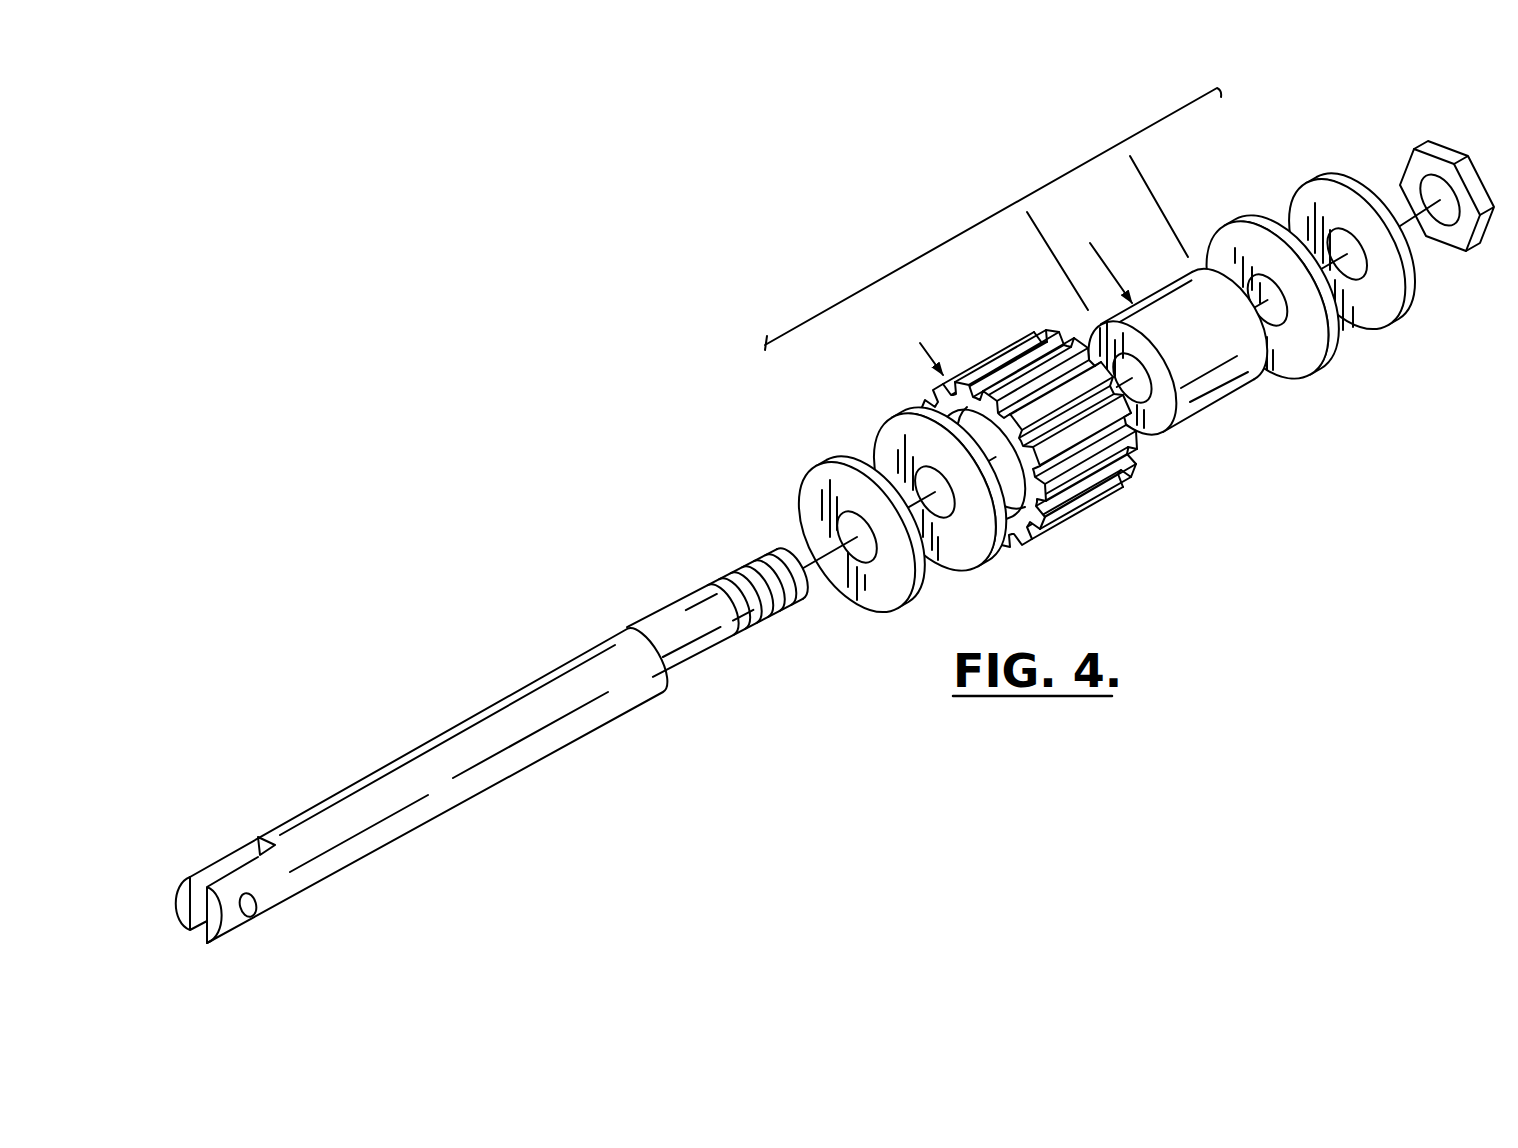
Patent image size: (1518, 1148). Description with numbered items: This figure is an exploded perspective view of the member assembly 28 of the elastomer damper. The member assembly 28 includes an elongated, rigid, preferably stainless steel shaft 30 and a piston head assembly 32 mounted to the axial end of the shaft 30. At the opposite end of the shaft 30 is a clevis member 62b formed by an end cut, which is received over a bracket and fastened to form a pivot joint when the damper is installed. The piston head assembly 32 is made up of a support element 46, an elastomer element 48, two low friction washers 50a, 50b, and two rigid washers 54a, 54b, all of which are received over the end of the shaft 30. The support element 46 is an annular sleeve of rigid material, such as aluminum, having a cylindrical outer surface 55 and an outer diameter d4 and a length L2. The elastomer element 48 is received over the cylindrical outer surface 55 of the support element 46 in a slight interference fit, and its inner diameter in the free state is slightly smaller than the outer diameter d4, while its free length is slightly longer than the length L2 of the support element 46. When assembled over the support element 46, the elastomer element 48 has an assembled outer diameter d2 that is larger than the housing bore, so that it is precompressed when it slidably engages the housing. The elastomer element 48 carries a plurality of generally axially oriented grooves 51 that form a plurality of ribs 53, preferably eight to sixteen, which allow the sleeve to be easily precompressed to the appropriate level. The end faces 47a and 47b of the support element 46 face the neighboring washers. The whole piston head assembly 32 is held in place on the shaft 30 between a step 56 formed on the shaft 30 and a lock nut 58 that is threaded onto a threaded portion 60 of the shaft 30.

The member assembly 28 is at (835, 515).
The shaft 30 is at (502, 743).
The piston head assembly 32 is at (1118, 360).
The support element 46 is at (1201, 325).
The hub first end face 47a is at (1158, 413).
The hub second end face 47b is at (1273, 345).
The elastomer element 48 is at (1033, 428).
The low friction washer 50a is at (895, 413).
The low friction washer 50b is at (1238, 220).
The grooves 51 is at (1068, 338).
The ribs 53 is at (1092, 468).
The rigid washer 54a is at (820, 465).
The rigid washer 54b is at (1327, 180).
The cylindrical outer surface 55 is at (1217, 357).
The step 56 is at (727, 610).
The lock nut 58 is at (1431, 150).
The threaded portion 60 is at (815, 606).
The clevis member 62b is at (233, 838).
The assembled outer diameter d2 is at (1035, 548).
The outer diameter of the support element d4 is at (1190, 430).
The length of the support element L2 is at (1040, 226).